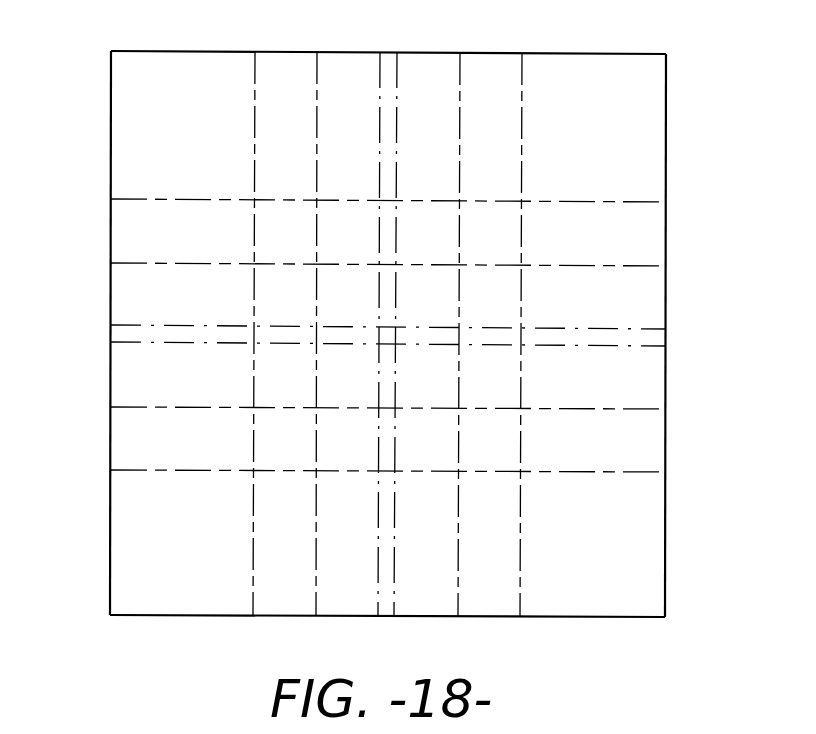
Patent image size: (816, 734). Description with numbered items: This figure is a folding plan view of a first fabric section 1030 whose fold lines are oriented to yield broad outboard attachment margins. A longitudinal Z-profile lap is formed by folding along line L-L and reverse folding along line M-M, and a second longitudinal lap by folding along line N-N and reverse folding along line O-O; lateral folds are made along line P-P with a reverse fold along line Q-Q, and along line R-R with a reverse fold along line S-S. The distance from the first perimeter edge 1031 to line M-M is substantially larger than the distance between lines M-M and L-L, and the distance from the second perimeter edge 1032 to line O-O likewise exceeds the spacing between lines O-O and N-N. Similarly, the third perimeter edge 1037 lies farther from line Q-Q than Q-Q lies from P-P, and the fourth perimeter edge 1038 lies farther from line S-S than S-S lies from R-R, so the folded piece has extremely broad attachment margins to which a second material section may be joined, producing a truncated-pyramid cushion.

The first fabric section 1030 is at (439, 336).
The first perimeter edge 1031 is at (666, 363).
The second perimeter edge 1032 is at (111, 130).
The third perimeter edge 1037 is at (588, 52).
The fourth perimeter edge 1038 is at (600, 618).